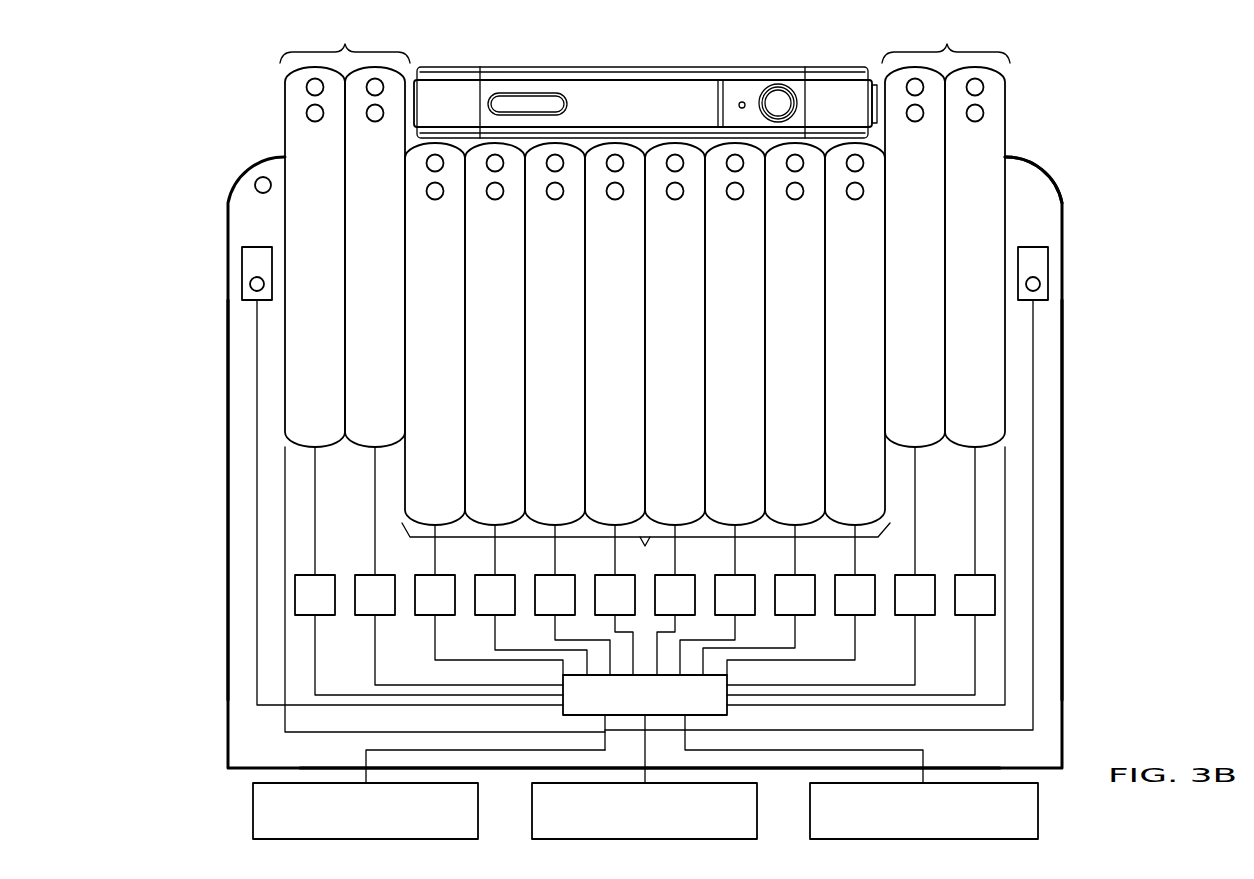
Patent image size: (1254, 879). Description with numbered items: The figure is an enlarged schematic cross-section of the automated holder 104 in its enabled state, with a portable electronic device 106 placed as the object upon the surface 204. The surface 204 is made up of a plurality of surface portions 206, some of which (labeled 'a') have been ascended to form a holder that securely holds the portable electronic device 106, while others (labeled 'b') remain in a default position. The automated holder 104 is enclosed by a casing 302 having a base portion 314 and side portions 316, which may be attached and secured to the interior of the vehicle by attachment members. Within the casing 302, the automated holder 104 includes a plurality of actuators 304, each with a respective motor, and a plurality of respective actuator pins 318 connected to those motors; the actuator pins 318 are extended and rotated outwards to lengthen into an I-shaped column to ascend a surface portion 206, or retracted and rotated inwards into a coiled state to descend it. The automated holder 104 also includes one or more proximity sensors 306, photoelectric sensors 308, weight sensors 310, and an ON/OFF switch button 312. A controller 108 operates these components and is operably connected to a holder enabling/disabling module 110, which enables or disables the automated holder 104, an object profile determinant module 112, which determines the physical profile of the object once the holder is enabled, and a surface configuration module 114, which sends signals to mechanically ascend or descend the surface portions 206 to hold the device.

The automated holder 104 is at (1018, 152).
The portable electronic device 106 is at (643, 67).
The controller 108 is at (563, 707).
The holder enabling/disabling module 110 is at (253, 812).
The object profile determinant module 112 is at (757, 791).
The surface configuration module 114 is at (1038, 808).
The surface 204 is at (345, 66).
The plurality of surface portions 206 is at (407, 66).
The casing 302 is at (1062, 425).
The plurality of actuators 304 is at (312, 593).
The proximity sensors 306 is at (252, 280).
The photoelectric sensors 308 is at (426, 163).
The weight sensors 310 is at (435, 200).
The ON/OFF switch button 312 is at (263, 177).
The base portion 314 is at (524, 768).
The side portions 316 is at (228, 491).
The actuator pins 318 is at (315, 510).